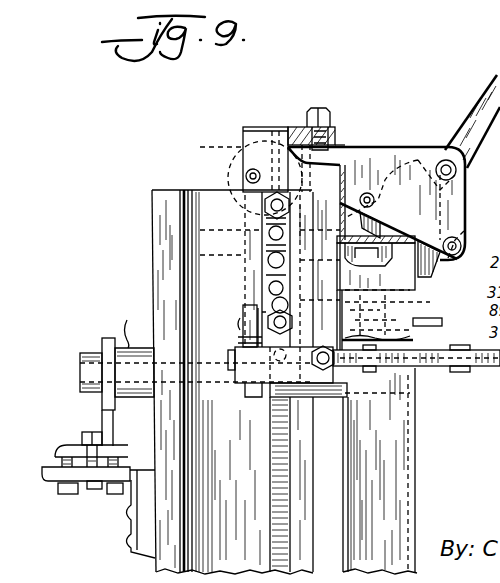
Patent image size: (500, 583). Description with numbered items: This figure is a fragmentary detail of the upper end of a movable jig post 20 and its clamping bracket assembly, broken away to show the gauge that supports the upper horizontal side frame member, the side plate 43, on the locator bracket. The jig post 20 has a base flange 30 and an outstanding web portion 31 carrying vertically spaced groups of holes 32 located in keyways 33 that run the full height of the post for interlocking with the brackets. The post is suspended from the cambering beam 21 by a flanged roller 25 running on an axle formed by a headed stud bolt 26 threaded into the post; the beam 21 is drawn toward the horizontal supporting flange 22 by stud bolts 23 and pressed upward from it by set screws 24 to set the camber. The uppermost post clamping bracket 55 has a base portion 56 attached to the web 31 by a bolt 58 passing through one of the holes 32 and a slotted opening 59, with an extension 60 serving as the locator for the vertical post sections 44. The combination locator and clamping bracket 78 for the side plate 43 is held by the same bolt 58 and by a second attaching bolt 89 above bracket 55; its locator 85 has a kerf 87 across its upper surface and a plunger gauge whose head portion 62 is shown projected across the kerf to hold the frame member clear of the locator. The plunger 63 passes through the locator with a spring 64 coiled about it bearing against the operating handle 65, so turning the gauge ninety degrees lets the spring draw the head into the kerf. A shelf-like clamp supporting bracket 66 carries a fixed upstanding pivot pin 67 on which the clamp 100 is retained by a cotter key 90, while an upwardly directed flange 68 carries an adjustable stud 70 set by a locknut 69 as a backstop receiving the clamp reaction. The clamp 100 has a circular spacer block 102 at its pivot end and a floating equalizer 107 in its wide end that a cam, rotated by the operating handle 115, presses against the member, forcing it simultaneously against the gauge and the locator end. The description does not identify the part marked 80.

The movable jig post 20 is at (145, 217).
The cambering beam 21 is at (102, 419).
The horizontal supporting flange 22 is at (52, 482).
The stud bolt 23 is at (82, 436).
The set screw 24 is at (80, 498).
The roller 25 is at (122, 324).
The headed stud bolt 26 is at (82, 358).
The base flange 30 is at (165, 241).
The web portion 31 is at (238, 188).
The adjustment holes 32 is at (260, 250).
The keyway 33 is at (270, 459).
The side plate 43 is at (447, 241).
The vertical post section 44 is at (393, 451).
The post clamping bracket 55 is at (234, 349).
The base portion 56 is at (262, 306).
The attaching bolt 58 is at (270, 304).
The slotted opening 59 is at (272, 300).
The locator extension 60 is at (425, 328).
The gauge head 62 is at (381, 232).
The plunger 63 is at (420, 272).
The spring 64 is at (398, 315).
The operating handle 65 is at (406, 320).
The clamp supporting bracket 66 is at (290, 378).
The pivot pin 67 is at (250, 318).
The upstanding flange 68 is at (242, 371).
The locknut 69 is at (326, 112).
The adjustable stud 70 is at (340, 136).
The combination locator and clamping bracket 78 is at (248, 118).
The clamp block 80 is at (281, 150).
The locator 85 is at (402, 279).
The kerf 87 is at (440, 267).
The second attaching bolt 89 is at (264, 207).
The cotter key 90 is at (243, 328).
The clamp 100 is at (380, 150).
The spacer block 102 is at (468, 175).
The equalizer 107 is at (468, 208).
The operating handle 115 is at (498, 73).